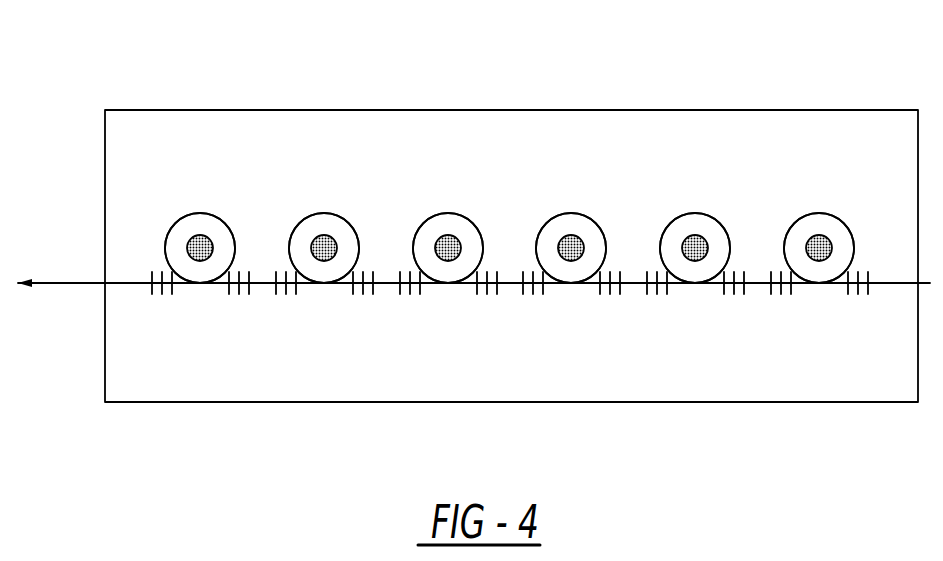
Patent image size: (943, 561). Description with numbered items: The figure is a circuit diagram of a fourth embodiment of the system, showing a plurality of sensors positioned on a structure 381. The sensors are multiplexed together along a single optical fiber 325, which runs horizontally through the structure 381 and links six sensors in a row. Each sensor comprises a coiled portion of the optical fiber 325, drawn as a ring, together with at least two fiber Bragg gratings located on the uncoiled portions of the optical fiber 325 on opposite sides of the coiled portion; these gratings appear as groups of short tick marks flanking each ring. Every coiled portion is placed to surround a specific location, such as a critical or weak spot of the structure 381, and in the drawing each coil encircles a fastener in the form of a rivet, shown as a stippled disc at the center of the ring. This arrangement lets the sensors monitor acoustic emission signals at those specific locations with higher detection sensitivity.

The optical fiber 325 is at (70, 281).
The structure 381 is at (141, 130).